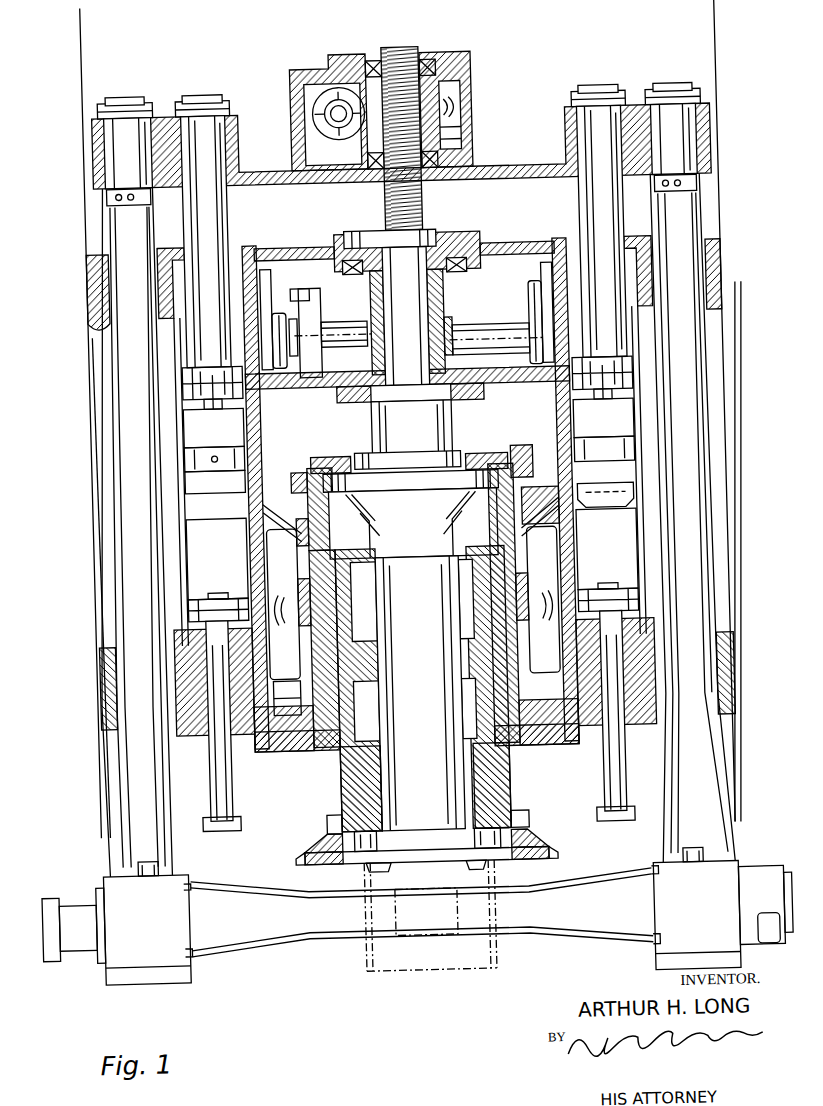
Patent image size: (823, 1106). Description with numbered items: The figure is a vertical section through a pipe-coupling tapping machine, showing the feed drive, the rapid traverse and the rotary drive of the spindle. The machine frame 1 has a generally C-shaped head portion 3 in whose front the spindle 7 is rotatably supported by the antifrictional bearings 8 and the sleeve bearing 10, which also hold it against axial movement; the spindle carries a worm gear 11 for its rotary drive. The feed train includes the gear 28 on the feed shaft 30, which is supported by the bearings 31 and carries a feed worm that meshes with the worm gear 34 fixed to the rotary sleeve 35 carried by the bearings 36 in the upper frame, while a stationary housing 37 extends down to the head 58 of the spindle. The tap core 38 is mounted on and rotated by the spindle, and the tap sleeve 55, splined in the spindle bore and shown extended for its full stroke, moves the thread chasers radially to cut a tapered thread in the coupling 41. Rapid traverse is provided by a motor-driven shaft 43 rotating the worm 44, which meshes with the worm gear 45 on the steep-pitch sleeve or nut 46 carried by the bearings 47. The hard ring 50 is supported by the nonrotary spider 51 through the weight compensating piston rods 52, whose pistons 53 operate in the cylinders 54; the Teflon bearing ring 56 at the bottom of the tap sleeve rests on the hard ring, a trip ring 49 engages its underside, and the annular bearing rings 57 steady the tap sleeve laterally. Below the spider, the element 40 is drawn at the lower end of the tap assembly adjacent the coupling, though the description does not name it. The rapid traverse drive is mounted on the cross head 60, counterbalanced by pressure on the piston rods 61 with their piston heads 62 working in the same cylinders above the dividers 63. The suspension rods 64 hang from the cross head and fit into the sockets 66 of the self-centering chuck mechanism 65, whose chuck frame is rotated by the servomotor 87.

The machine frame 1 is at (256, 731).
The head portion 3 is at (94, 12).
The spindle 7 is at (300, 562).
The antifrictional bearings 8 is at (560, 673).
The sleeve bearing 10 is at (298, 497).
The worm gear 11 is at (280, 617).
The gear 28 is at (314, 304).
The feed shaft 30 is at (333, 334).
The bearings 31 is at (296, 310).
The worm gear 34 is at (455, 332).
The rotary sleeve 35 is at (444, 289).
The bearings 36 is at (352, 268).
The stationary housing 37 is at (378, 432).
The tap core 38 is at (422, 683).
The work holder 40 is at (451, 867).
The coupling 41 is at (479, 868).
The shaft 43 is at (346, 112).
The worm 44 is at (318, 79).
The worm gear 45 is at (464, 106).
The sleeve or nut 46 is at (443, 132).
The bearings 47 is at (450, 63).
The trip ring 49 is at (351, 869).
The hard ring 50 is at (336, 868).
The spider 51 is at (279, 817).
The piston rods 52 is at (219, 765).
The pistons 53 is at (199, 605).
The cylinders 54 is at (253, 422).
The tap sleeve 55 is at (344, 796).
The Teflon bearing ring 56 is at (536, 860).
The annular bearing rings 57 is at (526, 830).
The head 58 is at (487, 457).
The cross head 60 is at (522, 172).
The piston rods 61 is at (224, 205).
The piston heads 62 is at (205, 368).
The dividers 63 is at (629, 498).
The suspension rods 64 is at (128, 424).
The self-centering chuck mechanism 65 is at (200, 936).
The sockets 66 is at (127, 842).
The servomotor 87 is at (75, 931).